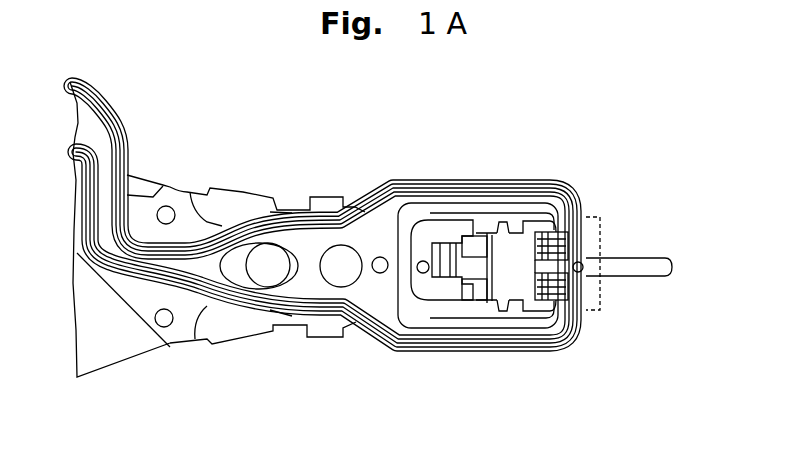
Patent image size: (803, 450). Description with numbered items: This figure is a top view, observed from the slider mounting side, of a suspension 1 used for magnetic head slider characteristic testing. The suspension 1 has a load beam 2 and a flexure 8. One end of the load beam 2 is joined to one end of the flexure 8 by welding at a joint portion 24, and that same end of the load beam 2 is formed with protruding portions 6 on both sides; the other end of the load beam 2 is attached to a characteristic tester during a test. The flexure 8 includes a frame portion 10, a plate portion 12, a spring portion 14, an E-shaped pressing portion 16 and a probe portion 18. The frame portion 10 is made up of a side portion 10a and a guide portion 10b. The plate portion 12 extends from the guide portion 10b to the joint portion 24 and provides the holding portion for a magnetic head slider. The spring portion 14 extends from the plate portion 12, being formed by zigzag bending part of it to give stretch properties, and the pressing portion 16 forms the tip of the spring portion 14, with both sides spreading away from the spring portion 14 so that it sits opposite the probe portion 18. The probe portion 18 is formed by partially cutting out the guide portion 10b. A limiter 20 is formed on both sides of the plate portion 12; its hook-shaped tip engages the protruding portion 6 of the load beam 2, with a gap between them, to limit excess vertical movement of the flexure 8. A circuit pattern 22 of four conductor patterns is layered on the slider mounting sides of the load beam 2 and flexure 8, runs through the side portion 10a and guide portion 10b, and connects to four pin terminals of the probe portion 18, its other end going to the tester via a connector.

The suspension 1 is at (210, 140).
The load beam 2 is at (120, 343).
The protruding portion 6 is at (505, 226).
The flexure 8 is at (375, 300).
The frame portion 10 is at (683, 133).
The side portion 10a is at (536, 200).
The guide portion 10b is at (587, 208).
The plate portion 12 is at (543, 352).
The spring portion 14 is at (447, 247).
The pressing portion 16 is at (430, 240).
The probe portion 18 is at (600, 300).
The limiter 20 is at (493, 228).
The circuit pattern 22 is at (291, 212).
The joint portion 24 is at (167, 206).